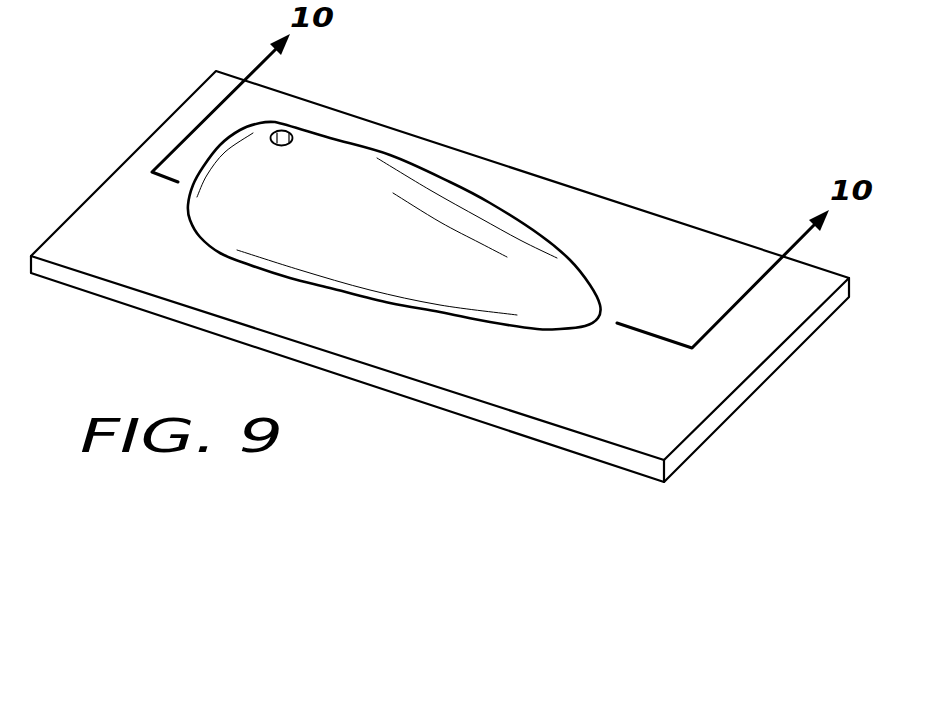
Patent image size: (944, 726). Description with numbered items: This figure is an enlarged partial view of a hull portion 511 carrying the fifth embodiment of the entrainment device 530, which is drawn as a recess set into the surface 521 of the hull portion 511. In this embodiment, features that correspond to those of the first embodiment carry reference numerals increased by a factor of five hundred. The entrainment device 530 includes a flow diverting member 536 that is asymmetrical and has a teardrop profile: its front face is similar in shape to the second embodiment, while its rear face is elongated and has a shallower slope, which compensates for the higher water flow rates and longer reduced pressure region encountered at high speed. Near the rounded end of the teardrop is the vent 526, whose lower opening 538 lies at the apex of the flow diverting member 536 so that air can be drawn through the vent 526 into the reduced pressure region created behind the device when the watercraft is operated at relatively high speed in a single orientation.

The base plate 511 is at (440, 276).
The upper surface of base plate 521 is at (689, 276).
The entrainment device 530 is at (412, 185).
The flow diverting member 536 is at (480, 227).
The vent 526 is at (281, 130).
The lower opening 538 is at (293, 140).